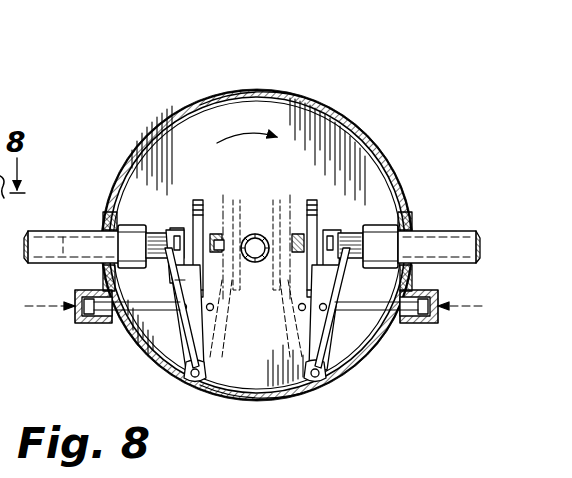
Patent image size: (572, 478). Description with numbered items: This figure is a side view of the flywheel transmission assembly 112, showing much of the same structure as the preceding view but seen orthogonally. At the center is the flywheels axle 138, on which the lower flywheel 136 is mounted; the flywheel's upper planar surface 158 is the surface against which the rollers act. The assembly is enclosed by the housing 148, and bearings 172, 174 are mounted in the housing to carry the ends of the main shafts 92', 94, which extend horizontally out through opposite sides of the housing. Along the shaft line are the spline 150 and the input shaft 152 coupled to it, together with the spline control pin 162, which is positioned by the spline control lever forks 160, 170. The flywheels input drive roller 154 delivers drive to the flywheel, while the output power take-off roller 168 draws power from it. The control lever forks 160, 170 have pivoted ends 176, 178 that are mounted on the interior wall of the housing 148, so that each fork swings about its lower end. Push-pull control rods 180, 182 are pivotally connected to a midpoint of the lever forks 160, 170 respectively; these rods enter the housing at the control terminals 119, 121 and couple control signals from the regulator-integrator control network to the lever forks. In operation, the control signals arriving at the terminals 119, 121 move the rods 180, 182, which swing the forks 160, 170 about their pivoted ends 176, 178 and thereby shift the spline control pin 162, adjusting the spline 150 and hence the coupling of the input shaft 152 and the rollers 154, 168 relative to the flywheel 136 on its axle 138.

The pivot assembly 112 is at (168, 80).
The housing 148 is at (272, 93).
The lower flywheel 136 is at (324, 117).
The upper planar surface 158 is at (320, 157).
The bearing 172 is at (103, 221).
The main shaft 92' is at (72, 230).
The spline 150 is at (121, 229).
The input shaft 152 is at (163, 232).
The flywheels input drive roller 154 is at (233, 198).
The spline control pin 162 is at (211, 246).
The flywheels axle 138 is at (257, 233).
The output power take-off roller 168 is at (311, 200).
The bearing 174 is at (412, 226).
The main shaft 94 is at (429, 264).
The spline control lever fork 160 is at (180, 280).
The pivoted end 176 is at (280, 355).
The spline control lever fork 170 is at (329, 283).
The control terminal 119 is at (92, 322).
The control terminal 121 is at (406, 325).
The push-pull control rod 180 is at (150, 343).
The push-pull control rod 182 is at (348, 373).
The pivoted end 178 is at (282, 400).